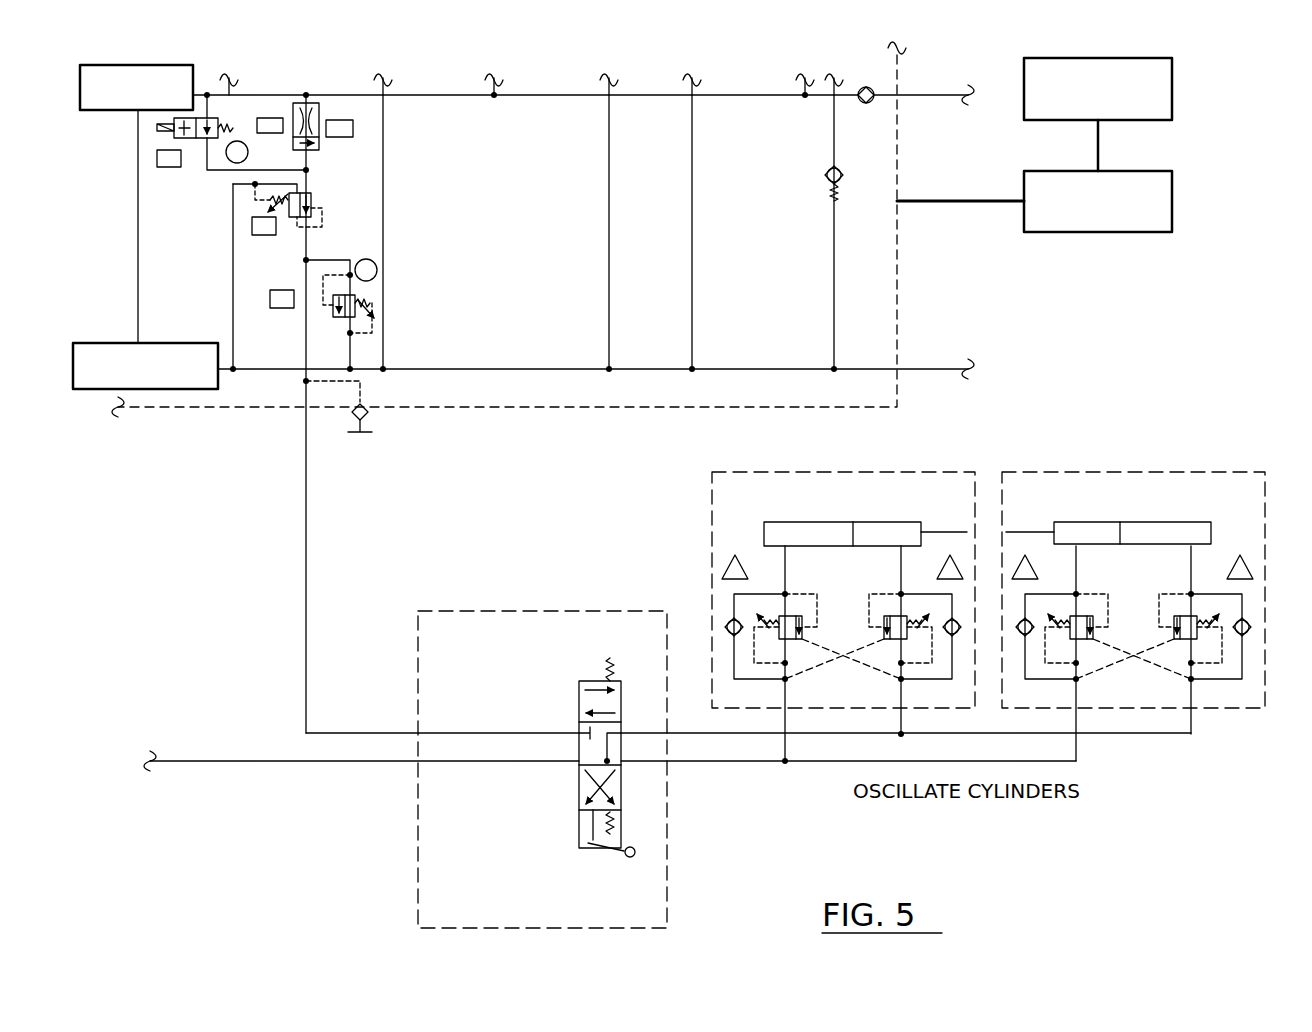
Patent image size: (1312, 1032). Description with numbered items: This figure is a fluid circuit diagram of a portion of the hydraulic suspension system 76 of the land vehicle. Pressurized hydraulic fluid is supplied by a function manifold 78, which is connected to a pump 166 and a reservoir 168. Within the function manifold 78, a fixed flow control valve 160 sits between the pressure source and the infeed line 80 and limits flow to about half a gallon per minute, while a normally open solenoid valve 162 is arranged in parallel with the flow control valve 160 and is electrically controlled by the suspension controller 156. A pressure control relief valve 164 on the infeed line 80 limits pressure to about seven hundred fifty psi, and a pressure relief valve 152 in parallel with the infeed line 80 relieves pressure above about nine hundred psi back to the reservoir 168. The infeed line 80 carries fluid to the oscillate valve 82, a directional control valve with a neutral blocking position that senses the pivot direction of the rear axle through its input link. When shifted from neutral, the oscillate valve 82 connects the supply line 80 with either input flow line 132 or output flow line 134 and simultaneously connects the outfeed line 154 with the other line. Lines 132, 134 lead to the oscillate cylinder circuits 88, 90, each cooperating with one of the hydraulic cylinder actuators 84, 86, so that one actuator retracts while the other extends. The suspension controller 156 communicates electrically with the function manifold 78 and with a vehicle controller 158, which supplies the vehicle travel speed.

The hydraulic suspension system 76 is at (759, 60).
The function manifold 78 is at (697, 401).
The infeed line 80 is at (306, 520).
The oscillate valve 82 is at (466, 887).
The hydraulic cylinder actuator 84 is at (764, 535).
The hydraulic cylinder actuator 86 is at (1110, 522).
The oscillate cylinder circuit 88 is at (712, 493).
The oscillate cylinder circuit 90 is at (1110, 472).
The input flow line 132 is at (762, 735).
The output flow line 134 is at (735, 762).
The pressure relief valve 152 is at (357, 312).
The outfeed line 154 is at (357, 762).
The suspension controller 156 is at (1098, 201).
The vehicle controller 158 is at (1098, 114).
The flow control valve 160 is at (309, 101).
The solenoid valve 162 is at (210, 114).
The pressure control relief valve 164 is at (314, 210).
The pump 166 is at (138, 204).
The reservoir 168 is at (145, 366).